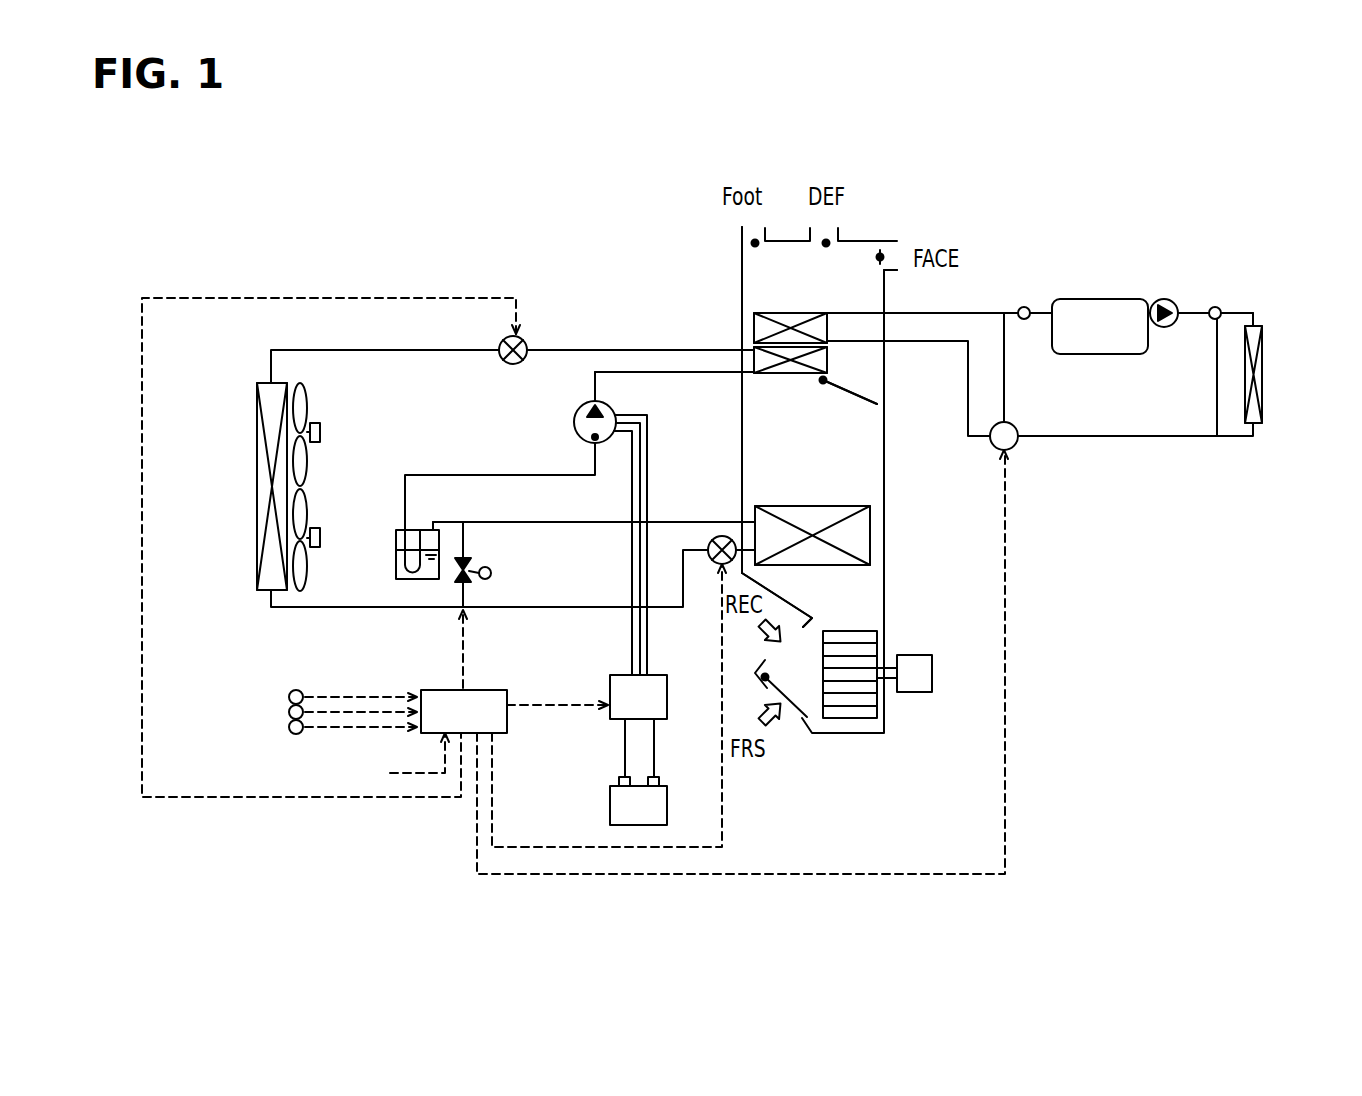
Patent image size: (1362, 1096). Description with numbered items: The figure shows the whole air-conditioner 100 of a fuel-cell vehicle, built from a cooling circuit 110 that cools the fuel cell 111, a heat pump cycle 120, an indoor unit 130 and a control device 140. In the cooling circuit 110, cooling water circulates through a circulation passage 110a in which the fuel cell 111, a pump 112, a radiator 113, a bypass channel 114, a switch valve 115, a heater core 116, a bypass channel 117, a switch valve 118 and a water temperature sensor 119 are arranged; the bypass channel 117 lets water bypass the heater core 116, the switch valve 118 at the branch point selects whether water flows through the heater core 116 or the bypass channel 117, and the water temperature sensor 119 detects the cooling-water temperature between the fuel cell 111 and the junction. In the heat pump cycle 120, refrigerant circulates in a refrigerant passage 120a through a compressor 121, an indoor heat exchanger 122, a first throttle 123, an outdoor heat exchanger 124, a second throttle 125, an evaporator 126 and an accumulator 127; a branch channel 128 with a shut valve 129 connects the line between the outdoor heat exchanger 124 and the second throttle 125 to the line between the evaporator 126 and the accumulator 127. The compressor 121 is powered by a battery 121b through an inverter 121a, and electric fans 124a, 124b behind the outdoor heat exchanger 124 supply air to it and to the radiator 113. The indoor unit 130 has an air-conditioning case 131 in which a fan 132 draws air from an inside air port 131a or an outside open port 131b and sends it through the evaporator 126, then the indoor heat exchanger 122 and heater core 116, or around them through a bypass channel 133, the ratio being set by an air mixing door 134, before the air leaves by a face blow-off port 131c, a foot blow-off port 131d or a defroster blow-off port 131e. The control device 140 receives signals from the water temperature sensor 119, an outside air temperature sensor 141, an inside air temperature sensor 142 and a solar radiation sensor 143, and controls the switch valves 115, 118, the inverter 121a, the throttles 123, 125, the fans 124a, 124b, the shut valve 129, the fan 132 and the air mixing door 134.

The air-conditioner 100 is at (497, 283).
The cooling circuit 110 is at (1113, 282).
The circulation passage 110a is at (1213, 307).
The fuel cell 111 is at (1095, 299).
The pump 112 is at (1160, 299).
The radiator 113 is at (1265, 350).
The bypass channel 114 is at (1217, 378).
The switch valve 115 is at (1222, 313).
The heater core 116 is at (795, 313).
The bypass channel 117 is at (1005, 375).
The switch valve 118 is at (1015, 428).
The water temperature sensor 119 is at (1024, 306).
The heat pump cycle 120 is at (516, 298).
The refrigerant passage 120a is at (645, 350).
The compressor 121 is at (574, 422).
The inverter 121a is at (616, 675).
The battery 121b is at (612, 786).
The indoor heat exchanger 122 is at (790, 373).
The first throttle 123 is at (525, 340).
The outdoor heat exchanger 124 is at (257, 405).
The electric fan 124a is at (307, 405).
The electric fan 124b is at (307, 507).
The second throttle 125 is at (712, 538).
The evaporator 126 is at (805, 506).
The accumulator 127 is at (396, 562).
The branch channel 128 is at (465, 540).
The shut valve 129 is at (475, 588).
The indoor unit 130 is at (722, 275).
The air-conditioning case 131 is at (742, 318).
The inside air port 131a is at (775, 650).
The outside open port 131b is at (800, 717).
The face blow-off port 131c is at (897, 262).
The foot blow-off port 131d is at (752, 238).
The defroster blow-off port 131e is at (830, 238).
The fan 132 is at (866, 718).
The bypass channel 133 is at (843, 360).
The air mixing door 134 is at (847, 402).
The control device 140 is at (490, 690).
The outside air temperature sensor 141 is at (289, 697).
The inside air temperature sensor 142 is at (289, 712).
The solar radiation sensor 143 is at (289, 727).